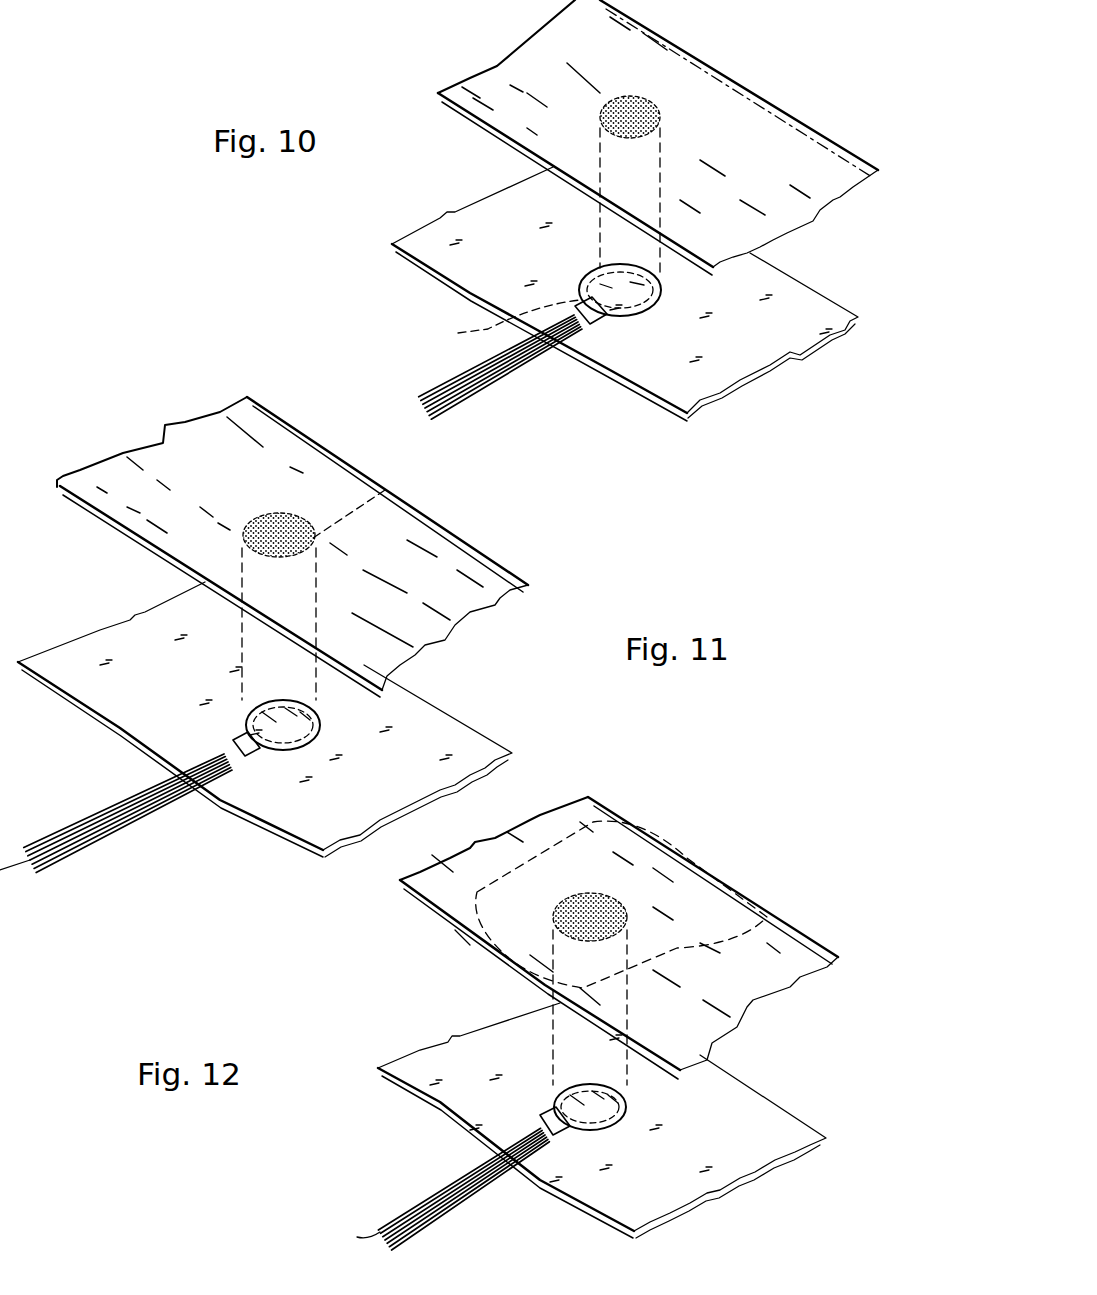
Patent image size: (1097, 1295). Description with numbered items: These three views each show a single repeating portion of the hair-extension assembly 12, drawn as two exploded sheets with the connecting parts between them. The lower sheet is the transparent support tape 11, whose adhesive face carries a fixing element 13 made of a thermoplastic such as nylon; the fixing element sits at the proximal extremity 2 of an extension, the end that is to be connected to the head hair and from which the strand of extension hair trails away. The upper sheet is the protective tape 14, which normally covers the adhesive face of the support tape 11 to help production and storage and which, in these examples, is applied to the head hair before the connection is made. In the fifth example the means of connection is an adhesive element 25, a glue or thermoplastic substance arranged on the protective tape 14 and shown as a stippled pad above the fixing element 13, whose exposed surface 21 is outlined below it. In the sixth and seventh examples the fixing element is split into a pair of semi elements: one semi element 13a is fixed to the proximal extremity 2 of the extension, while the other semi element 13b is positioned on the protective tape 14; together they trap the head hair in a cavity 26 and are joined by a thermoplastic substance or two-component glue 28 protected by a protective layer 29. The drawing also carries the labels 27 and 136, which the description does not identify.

In FIG. 10, the proximal extremity 2 is at (520, 367).
In FIG. 11, the proximal extremity 2 is at (115, 810).
In FIG. 12, the proximal extremity 2 is at (453, 1189).
In FIG. 10, the support tape 11 is at (752, 357).
In FIG. 11, the support tape 11 is at (265, 708).
In FIG. 12, the support tape 11 is at (725, 1163).
In FIG. 10, the assembly 12 is at (316, 283).
In FIG. 12, the assembly 12 is at (325, 1192).
In FIG. 10, the fixing element 13 is at (663, 291).
In FIG. 11, the semi element 13a is at (323, 735).
In FIG. 12, the semi element 13a is at (573, 1135).
In FIG. 12, the semi element 13b is at (687, 858).
In FIG. 10, the protective tape 14 is at (797, 126).
In FIG. 11, the protective tape 14 is at (468, 568).
In FIG. 12, the protective tape 14 is at (772, 980).
In FIG. 10, the exposed surface 21 is at (503, 324).
In FIG. 10, the adhesive element 25 is at (650, 108).
In FIG. 11, the cavity 26 is at (273, 753).
In FIG. 12, the cavity 26 is at (540, 1113).
In FIG. 11, the opening 27 is at (282, 520).
In FIG. 12, the glue 28 is at (610, 900).
In FIG. 12, the protective layer 29 is at (462, 942).
In FIG. 11, the slit 136 is at (385, 490).